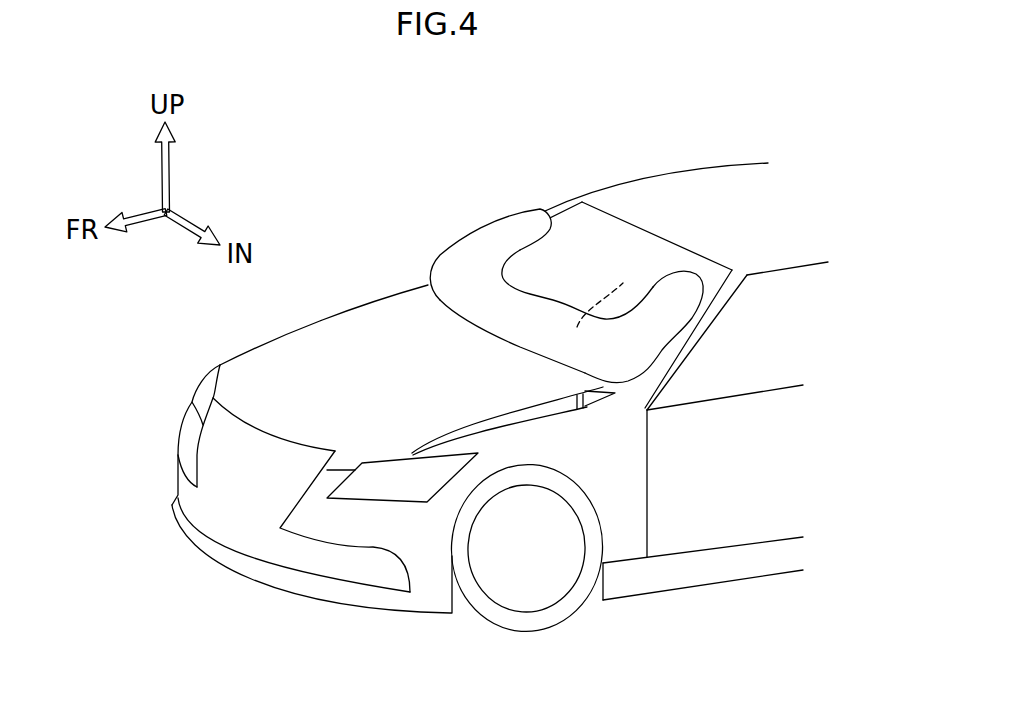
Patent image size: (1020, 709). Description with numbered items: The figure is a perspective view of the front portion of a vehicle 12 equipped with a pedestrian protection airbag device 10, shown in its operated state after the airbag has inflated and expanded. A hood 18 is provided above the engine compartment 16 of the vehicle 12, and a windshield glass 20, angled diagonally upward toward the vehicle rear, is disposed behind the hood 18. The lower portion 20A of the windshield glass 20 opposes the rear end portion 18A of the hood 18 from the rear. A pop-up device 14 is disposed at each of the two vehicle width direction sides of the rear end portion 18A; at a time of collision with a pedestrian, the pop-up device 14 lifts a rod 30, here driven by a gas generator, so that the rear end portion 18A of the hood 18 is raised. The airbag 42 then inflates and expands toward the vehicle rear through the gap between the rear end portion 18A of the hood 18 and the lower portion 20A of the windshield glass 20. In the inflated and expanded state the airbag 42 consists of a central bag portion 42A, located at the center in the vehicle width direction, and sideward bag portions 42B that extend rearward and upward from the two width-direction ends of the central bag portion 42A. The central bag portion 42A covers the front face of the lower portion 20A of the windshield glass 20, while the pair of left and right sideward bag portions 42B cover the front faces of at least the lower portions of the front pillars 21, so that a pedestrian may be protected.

The pedestrian protection airbag device 10 is at (528, 167).
The vehicle 12 is at (702, 167).
The pop-up device 14 is at (585, 402).
The engine compartment 16 is at (530, 415).
The hood 18 is at (323, 352).
The rear end portion of the hood 18A is at (430, 320).
The windshield glass 20 is at (618, 240).
The lower portion of the windshield glass 20A is at (614, 290).
The front pillar 21 is at (557, 206).
The rod 30 is at (672, 429).
The airbag 42 is at (596, 264).
The central bag portion 42A is at (552, 300).
The sideward bag portion 42B is at (496, 219).